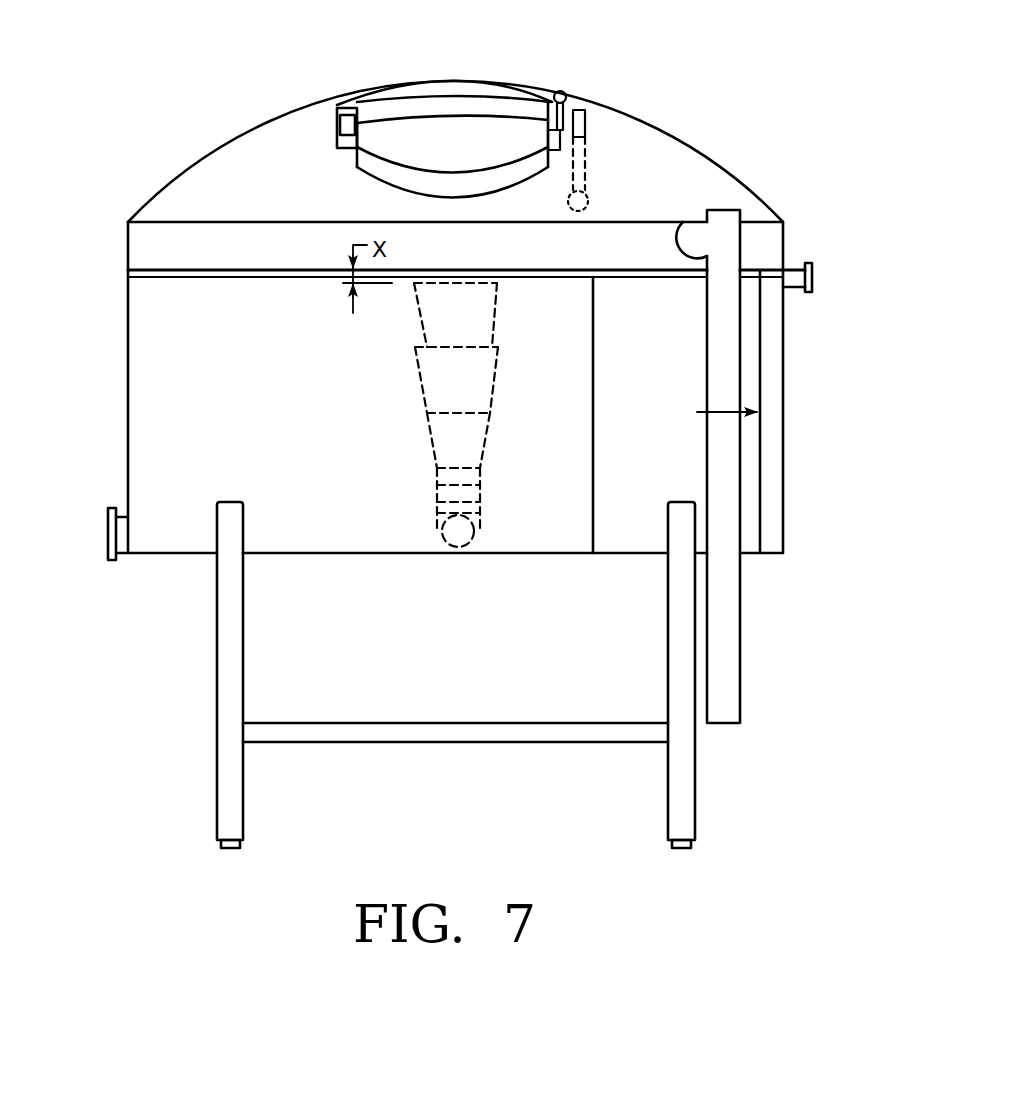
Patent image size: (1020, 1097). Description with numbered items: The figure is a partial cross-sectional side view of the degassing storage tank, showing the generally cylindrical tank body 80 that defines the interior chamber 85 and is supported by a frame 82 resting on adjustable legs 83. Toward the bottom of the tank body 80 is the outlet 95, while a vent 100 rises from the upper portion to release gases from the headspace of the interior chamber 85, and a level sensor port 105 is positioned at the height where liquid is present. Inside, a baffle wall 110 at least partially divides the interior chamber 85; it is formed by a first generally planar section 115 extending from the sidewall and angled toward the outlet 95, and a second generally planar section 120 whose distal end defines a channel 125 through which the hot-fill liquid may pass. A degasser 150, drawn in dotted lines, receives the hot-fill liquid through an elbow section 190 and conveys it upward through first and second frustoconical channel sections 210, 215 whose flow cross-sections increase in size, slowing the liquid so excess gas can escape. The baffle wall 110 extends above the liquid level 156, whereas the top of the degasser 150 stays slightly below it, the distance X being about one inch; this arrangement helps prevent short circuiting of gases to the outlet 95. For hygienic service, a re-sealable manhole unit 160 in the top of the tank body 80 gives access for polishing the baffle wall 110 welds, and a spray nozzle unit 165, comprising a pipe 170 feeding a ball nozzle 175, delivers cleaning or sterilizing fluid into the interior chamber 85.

The tank body 80 is at (124, 346).
The frame 82 is at (412, 735).
The adjustable legs 83 is at (236, 620).
The interior chamber 85 is at (339, 384).
The outlet 95 is at (108, 532).
The vent 100 is at (734, 354).
The level sensor port 105 is at (813, 273).
The baffle wall 110 is at (178, 267).
The first generally planar section 115 is at (210, 390).
The second generally planar section 120 is at (665, 390).
The channel 125 is at (787, 412).
The degasser 150 is at (441, 415).
The liquid level 156 is at (200, 278).
The manhole unit 160 is at (457, 77).
The spray nozzle unit 165 is at (604, 106).
The pipe 170 is at (592, 140).
The ball nozzle 175 is at (592, 212).
The elbow section 190 is at (485, 513).
The first frustoconical channel section 210 is at (501, 407).
The second frustoconical channel section 215 is at (501, 334).